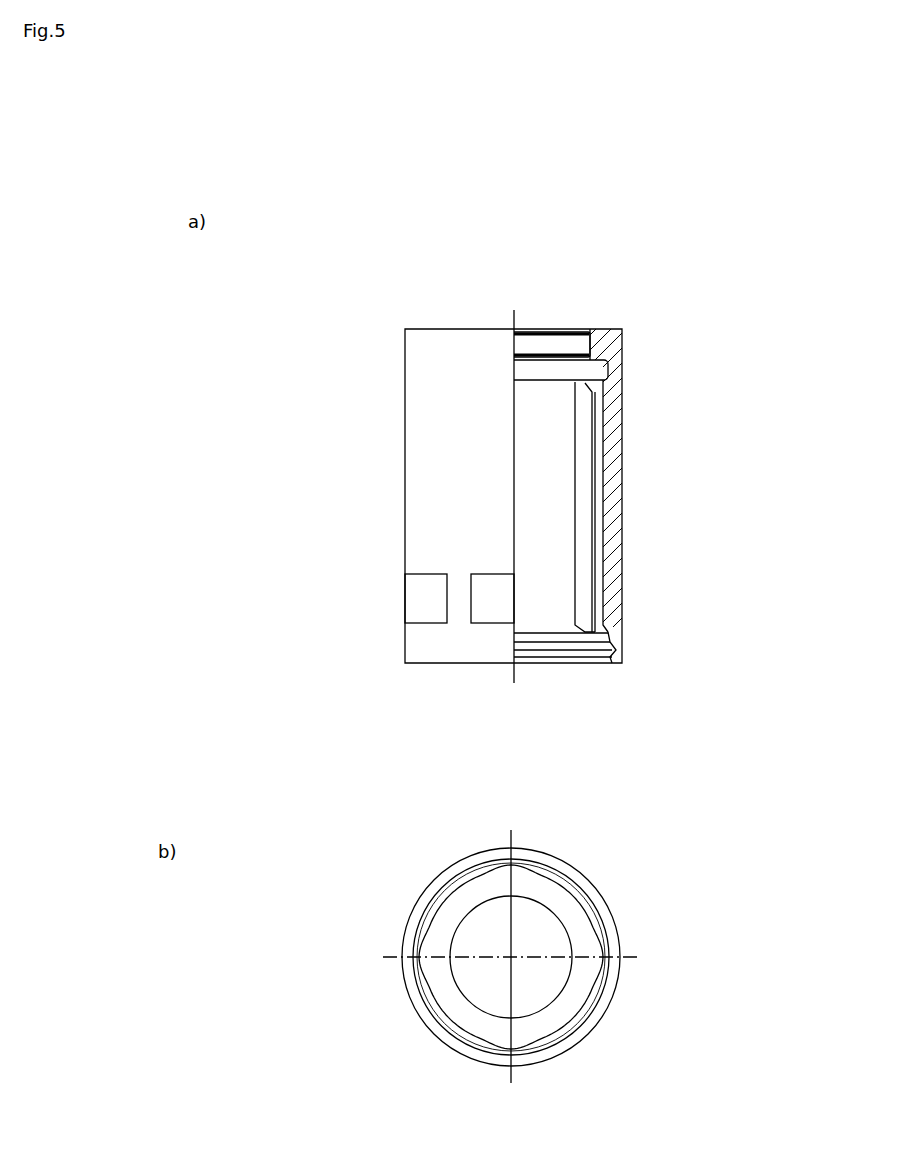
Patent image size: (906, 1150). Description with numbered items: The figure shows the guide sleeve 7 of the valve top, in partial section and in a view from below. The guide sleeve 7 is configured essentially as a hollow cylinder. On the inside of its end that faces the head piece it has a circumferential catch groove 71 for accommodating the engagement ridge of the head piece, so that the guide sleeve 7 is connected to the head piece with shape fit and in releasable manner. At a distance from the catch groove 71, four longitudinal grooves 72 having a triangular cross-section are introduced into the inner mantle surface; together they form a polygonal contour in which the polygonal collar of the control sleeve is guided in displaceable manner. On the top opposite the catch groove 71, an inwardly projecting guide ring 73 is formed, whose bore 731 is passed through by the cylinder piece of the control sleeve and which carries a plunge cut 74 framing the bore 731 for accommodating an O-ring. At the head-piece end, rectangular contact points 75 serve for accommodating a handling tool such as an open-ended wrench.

The guide sleeve 7 is at (625, 179).
The catch groove 71 is at (604, 645).
The longitudinal grooves 72 is at (603, 472).
The guide ring 73 is at (553, 893).
The bore 731 is at (555, 948).
The plunge cut 74 is at (553, 343).
The contact points 75 is at (419, 604).